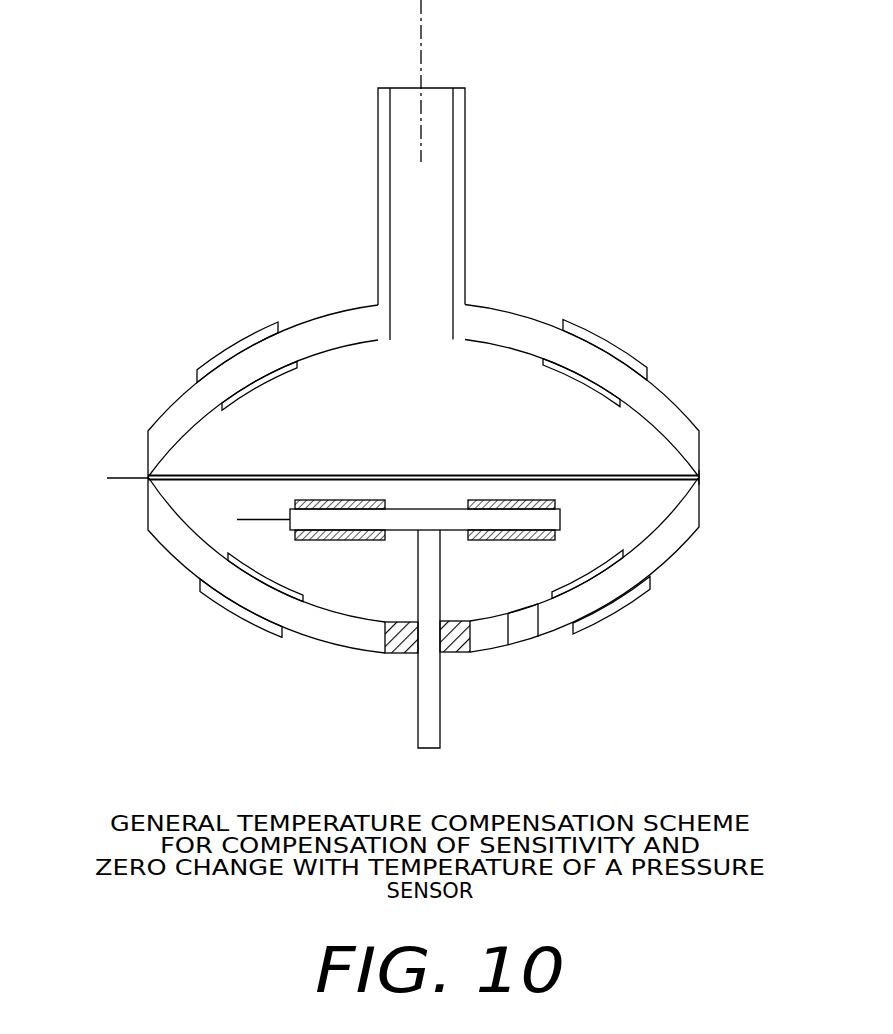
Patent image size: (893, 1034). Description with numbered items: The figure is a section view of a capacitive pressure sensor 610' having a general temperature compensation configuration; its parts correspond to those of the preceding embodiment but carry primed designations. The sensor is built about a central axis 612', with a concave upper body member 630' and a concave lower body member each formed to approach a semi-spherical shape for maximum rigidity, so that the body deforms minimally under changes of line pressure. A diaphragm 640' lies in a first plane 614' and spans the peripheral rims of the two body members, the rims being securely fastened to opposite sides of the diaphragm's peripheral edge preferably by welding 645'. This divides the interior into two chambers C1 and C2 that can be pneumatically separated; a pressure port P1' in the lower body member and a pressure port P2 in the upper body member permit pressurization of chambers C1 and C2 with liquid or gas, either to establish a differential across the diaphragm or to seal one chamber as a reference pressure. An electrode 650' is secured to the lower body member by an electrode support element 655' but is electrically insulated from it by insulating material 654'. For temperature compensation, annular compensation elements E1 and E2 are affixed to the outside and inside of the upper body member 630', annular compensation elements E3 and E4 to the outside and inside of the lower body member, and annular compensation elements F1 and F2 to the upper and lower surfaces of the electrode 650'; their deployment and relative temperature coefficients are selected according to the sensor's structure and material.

The central axis 612' is at (467, 81).
The pressure port P2 is at (437, 95).
The upper body member 630' is at (445, 391).
The sensor 610' is at (457, 590).
The diaphragm 640' is at (423, 458).
The first plane 614' is at (104, 457).
The welding 645' is at (740, 460).
The annular compensation element E1 is at (240, 340).
The annular compensation element E2 is at (258, 393).
The annular compensation element E3 is at (235, 614).
The annular compensation element E4 is at (605, 552).
The electrode 650' is at (398, 487).
The annular compensation element F1 is at (300, 500).
The annular compensation element F2 is at (350, 541).
The chamber C2 is at (464, 446).
The chamber C1 is at (500, 596).
The electrode support element 655' is at (465, 639).
The insulating material 654' is at (448, 660).
The pressure port P1' is at (551, 647).